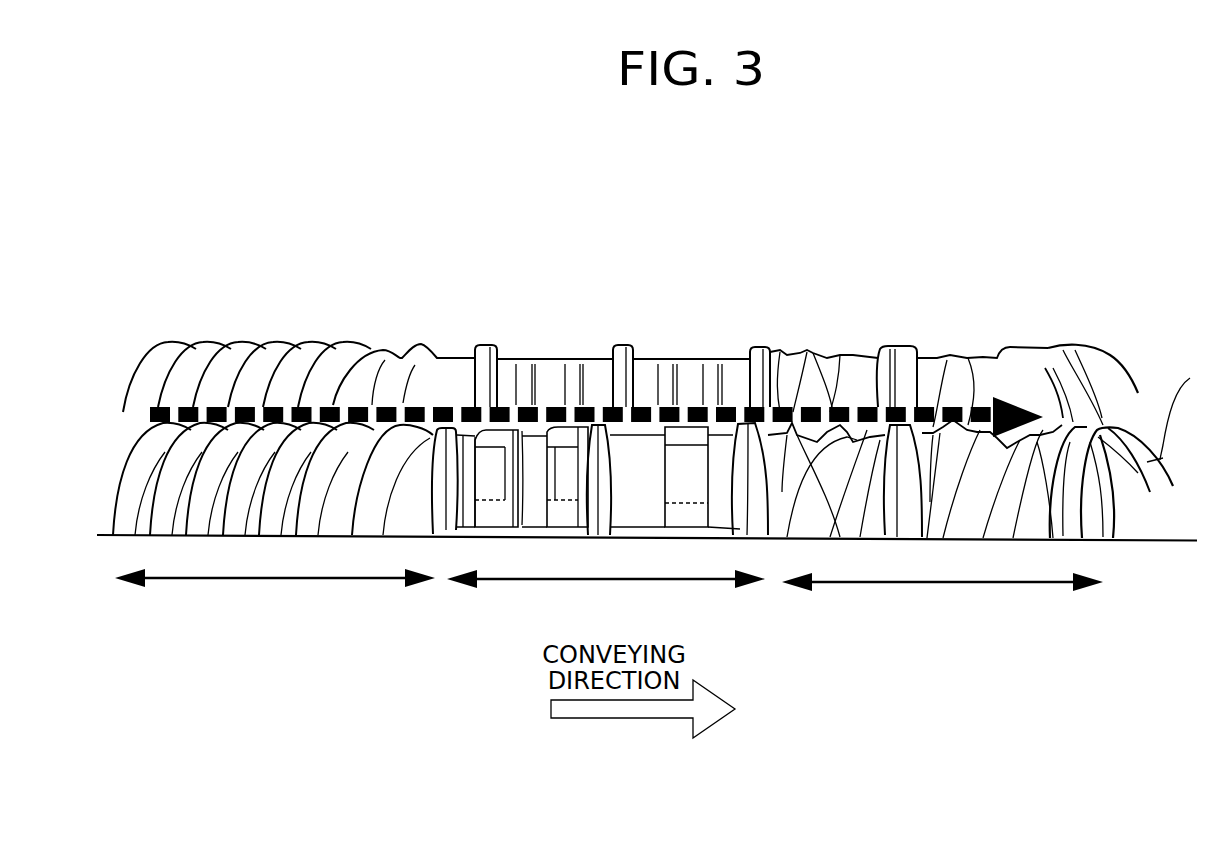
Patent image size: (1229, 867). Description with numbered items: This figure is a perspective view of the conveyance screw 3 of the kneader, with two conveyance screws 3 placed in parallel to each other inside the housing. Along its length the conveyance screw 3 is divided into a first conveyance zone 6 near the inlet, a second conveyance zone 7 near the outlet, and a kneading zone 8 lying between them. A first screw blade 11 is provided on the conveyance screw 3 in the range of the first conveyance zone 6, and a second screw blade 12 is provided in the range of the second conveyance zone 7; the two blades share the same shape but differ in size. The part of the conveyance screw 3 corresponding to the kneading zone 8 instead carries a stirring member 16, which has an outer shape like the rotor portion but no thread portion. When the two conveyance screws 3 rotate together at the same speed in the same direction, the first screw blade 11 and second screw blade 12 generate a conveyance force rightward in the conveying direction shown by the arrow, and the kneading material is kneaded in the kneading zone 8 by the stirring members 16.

The conveyance screw 3 is at (1120, 385).
The first conveyance zone 6 is at (275, 593).
The second conveyance zone 7 is at (942, 595).
The kneading zone 8 is at (606, 593).
The first screw blade 11 is at (300, 362).
The second screw blade 12 is at (957, 440).
The stirring member 16 is at (568, 438).